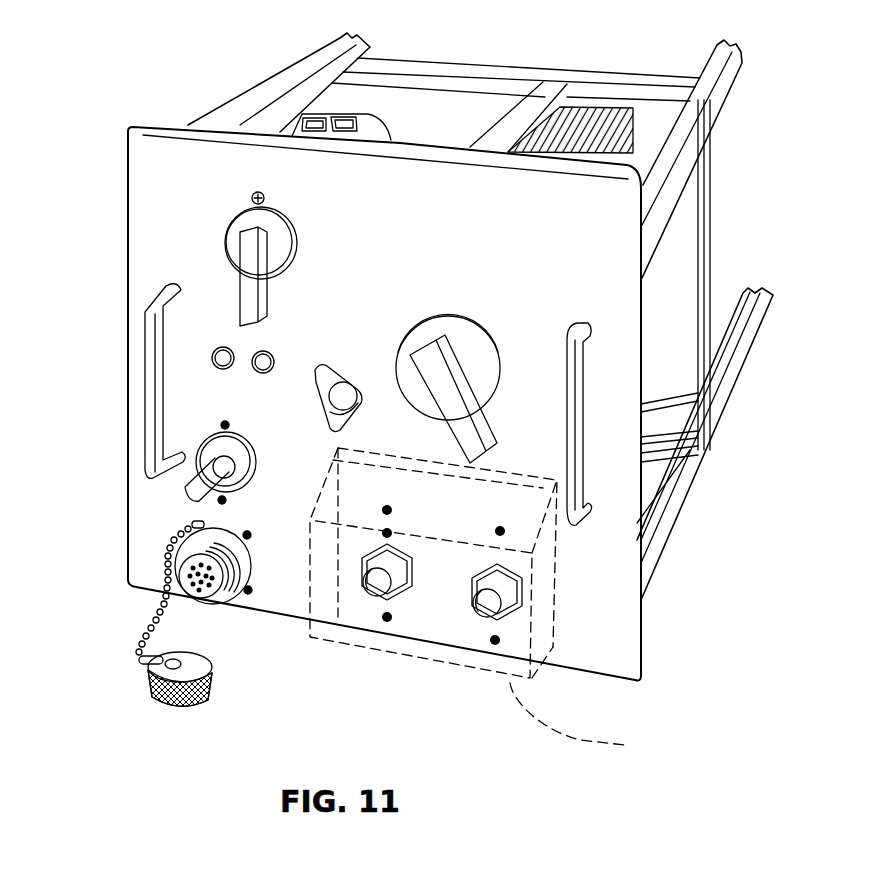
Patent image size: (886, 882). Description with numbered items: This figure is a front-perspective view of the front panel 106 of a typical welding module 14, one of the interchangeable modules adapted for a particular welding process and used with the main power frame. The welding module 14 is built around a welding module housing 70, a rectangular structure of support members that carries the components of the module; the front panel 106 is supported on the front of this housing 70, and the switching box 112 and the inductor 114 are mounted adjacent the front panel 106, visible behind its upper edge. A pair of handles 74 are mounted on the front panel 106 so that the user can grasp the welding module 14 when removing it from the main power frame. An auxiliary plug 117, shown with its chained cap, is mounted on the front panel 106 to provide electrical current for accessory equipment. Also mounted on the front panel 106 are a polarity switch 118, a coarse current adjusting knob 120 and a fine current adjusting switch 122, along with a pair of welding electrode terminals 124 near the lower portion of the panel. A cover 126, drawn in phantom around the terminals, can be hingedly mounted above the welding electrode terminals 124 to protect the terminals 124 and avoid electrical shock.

The welding module 14 is at (731, 503).
The welding module housing 70 is at (237, 107).
The handles 74 is at (148, 378).
The front panel 106 is at (593, 590).
The switching box 112 is at (330, 117).
The inductor 114 is at (587, 130).
The auxiliary plug 117 is at (150, 630).
The polarity switch 118 is at (467, 352).
The coarse current adjusting knob 120 is at (251, 232).
The fine current adjusting switch 122 is at (183, 493).
The welding electrode terminals 124 is at (472, 615).
The cover 126 is at (492, 604).